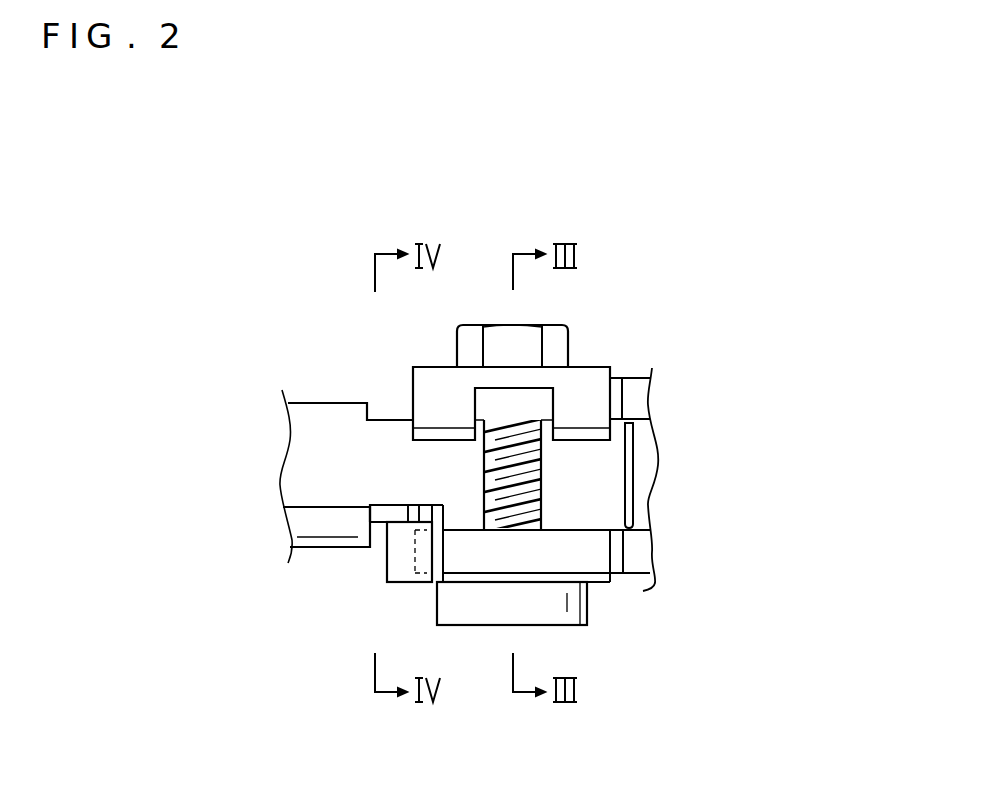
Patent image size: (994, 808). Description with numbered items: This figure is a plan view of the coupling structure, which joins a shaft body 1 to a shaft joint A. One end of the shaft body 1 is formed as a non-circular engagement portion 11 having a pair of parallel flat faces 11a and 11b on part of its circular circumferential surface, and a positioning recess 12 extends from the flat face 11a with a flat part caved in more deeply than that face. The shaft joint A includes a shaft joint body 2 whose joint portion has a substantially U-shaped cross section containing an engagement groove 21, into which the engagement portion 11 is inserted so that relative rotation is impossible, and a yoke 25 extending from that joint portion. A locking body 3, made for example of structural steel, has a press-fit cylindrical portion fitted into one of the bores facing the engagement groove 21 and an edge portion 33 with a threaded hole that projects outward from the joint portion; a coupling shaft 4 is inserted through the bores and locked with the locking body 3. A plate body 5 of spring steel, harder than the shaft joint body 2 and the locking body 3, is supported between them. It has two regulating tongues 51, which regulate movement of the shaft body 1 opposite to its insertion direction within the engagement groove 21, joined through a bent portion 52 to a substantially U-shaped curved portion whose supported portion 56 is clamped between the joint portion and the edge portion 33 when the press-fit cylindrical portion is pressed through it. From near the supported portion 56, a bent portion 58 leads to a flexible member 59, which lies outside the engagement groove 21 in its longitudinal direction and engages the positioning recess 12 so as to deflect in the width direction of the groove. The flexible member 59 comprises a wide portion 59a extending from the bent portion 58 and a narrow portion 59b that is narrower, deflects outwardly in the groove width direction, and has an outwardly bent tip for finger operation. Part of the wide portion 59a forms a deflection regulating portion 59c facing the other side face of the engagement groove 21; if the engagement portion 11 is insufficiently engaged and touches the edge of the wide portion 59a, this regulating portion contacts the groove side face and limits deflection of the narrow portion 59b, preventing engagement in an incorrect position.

The shaft body 1 is at (318, 396).
The shaft joint body 2 is at (471, 555).
The locking body 3 is at (496, 638).
The coupling shaft 4 is at (557, 340).
The plate body 5 is at (493, 588).
The engagement portion 11 is at (609, 476).
The flat face 11a is at (596, 531).
The flat face 11b is at (618, 418).
The positioning recess 12 is at (368, 516).
The engagement groove 21 is at (585, 529).
The yoke 25 is at (640, 577).
The edge portion 33 is at (560, 618).
The regulating tongue 51 is at (437, 430).
The bent portion 52 is at (440, 388).
The supported portion 56 is at (578, 583).
The bent portion 58 is at (402, 585).
The flexible member 59 is at (313, 531).
The wide portion 59a is at (392, 527).
The narrow portion 59b is at (397, 530).
The deflection regulating portion 59c is at (417, 507).
The shaft joint A is at (670, 442).